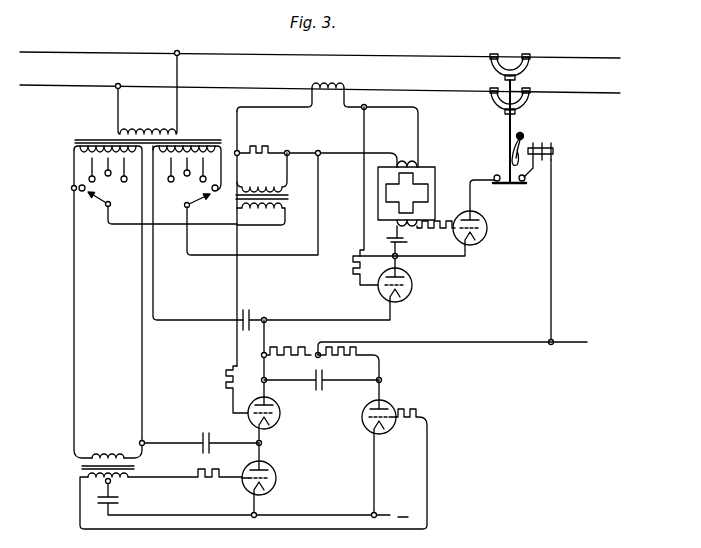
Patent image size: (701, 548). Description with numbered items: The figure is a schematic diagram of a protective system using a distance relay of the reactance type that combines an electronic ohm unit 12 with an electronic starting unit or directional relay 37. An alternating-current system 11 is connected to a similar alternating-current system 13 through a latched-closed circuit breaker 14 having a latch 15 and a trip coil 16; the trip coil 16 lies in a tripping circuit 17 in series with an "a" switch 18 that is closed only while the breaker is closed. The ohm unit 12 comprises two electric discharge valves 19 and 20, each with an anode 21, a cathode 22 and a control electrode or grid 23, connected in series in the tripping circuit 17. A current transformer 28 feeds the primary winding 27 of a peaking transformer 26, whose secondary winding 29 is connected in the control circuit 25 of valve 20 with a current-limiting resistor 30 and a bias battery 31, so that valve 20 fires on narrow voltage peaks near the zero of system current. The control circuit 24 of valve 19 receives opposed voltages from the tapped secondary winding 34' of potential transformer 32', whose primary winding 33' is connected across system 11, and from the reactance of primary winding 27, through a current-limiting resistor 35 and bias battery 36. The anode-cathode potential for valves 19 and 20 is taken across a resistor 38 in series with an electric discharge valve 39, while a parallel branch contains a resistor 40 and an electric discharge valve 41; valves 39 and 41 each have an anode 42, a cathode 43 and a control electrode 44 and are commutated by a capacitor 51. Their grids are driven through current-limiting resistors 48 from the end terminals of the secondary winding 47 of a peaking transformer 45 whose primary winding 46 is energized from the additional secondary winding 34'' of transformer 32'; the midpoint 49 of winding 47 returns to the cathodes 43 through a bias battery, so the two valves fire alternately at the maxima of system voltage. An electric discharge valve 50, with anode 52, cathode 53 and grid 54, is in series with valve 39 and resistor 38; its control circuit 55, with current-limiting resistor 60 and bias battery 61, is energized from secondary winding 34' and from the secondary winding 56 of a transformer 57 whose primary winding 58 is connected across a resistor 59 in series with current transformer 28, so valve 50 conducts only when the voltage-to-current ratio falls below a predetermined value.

The alternating-current system 11 is at (221, 87).
The alternating-current system 13 is at (578, 93).
The circuit breaker 14 is at (505, 60).
The current transformer 28 is at (336, 84).
The primary winding 33' is at (148, 93).
The potential transformer 32' is at (158, 287).
The secondary winding 34'' is at (155, 191).
The secondary winding 34' is at (241, 204).
The control circuit 55 is at (233, 328).
The resistor 59 is at (262, 148).
The primary winding 58 is at (261, 181).
The transformer 57 is at (289, 197).
The secondary winding 56 is at (263, 212).
The control circuit 24 is at (364, 192).
The primary winding 27 is at (401, 165).
The electronic ohm unit 12 is at (462, 184).
The peaking transformer 26 is at (436, 200).
The secondary winding 29 is at (388, 237).
The bias battery 31 is at (406, 242).
The current-limiting resistor 30 is at (440, 236).
The current-limiting resistor 35 is at (385, 259).
The electric discharge valve 19 is at (404, 273).
The electric discharge valve 20 is at (478, 213).
The anode 21 is at (405, 278).
The control electrode 23 is at (408, 288).
The cathode 22 is at (400, 301).
The control circuit 25 is at (458, 258).
The "a" switch 18 is at (521, 185).
The latch 15 is at (522, 141).
The trip coil 16 is at (546, 148).
The tripping circuit 17 is at (553, 204).
The bias battery 36 is at (246, 312).
The resistor 38 is at (292, 352).
The resistor 40 is at (362, 349).
The current-limiting resistor 60 is at (238, 373).
The electric discharge valve 50 is at (274, 405).
The anode 52 is at (262, 402).
The control electrode 54 is at (278, 414).
The cathode 53 is at (254, 429).
The commutating capacitor 51 is at (320, 392).
The electronic starting unit 37 is at (318, 446).
The anode 42 is at (370, 408).
The electric discharge valve 41 is at (389, 408).
The control electrode 44 is at (369, 428).
The cathode 43 is at (387, 429).
The current-limiting resistors 48 is at (419, 413).
The electric discharge valve 39 is at (246, 470).
The bias battery 61 is at (202, 441).
The primary winding 46 is at (106, 455).
The peaking transformer 45 is at (80, 467).
The secondary winding 47 is at (86, 481).
The midpoint 49 is at (112, 485).